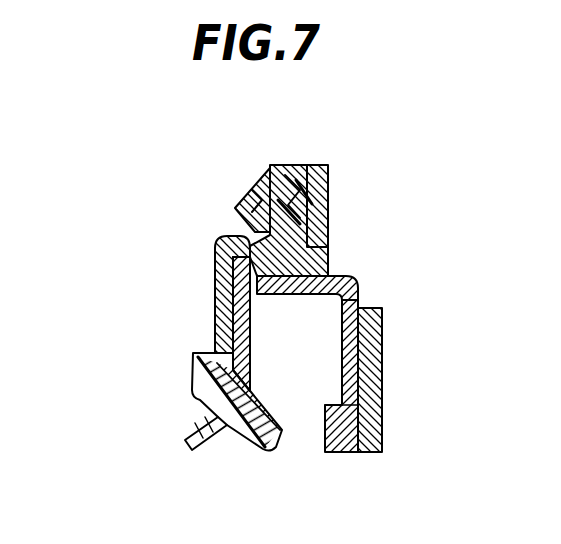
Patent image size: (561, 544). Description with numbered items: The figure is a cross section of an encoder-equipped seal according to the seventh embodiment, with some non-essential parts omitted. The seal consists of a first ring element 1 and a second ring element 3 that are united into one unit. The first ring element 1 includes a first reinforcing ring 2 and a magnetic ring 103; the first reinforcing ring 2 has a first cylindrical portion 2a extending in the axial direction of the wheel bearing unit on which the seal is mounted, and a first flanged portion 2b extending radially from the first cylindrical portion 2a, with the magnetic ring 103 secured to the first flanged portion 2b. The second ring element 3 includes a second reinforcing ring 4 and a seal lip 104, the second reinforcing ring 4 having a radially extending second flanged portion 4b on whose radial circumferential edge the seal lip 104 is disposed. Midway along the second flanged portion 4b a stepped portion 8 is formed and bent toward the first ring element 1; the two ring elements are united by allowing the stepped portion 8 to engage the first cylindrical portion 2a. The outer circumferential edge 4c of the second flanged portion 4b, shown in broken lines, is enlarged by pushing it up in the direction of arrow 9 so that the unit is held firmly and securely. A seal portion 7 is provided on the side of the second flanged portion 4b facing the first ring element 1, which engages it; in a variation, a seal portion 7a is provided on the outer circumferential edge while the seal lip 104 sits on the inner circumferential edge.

The first ring element 1 is at (378, 467).
The first reinforcing ring 2 is at (478, 322).
The first cylindrical portion 2a is at (336, 273).
The first flanged portion 2b is at (372, 322).
The second ring element 3 is at (165, 414).
The second reinforcing ring 4 is at (208, 318).
The second flanged portion 4b is at (212, 290).
The outer circumferential edge 4c is at (233, 192).
The seal portion 7 is at (330, 242).
The seal portion 7a is at (306, 167).
The stepped portion 8 is at (212, 270).
The arrow 9 is at (246, 141).
The magnetic ring 103 is at (380, 377).
The seal lip 104 is at (262, 453).